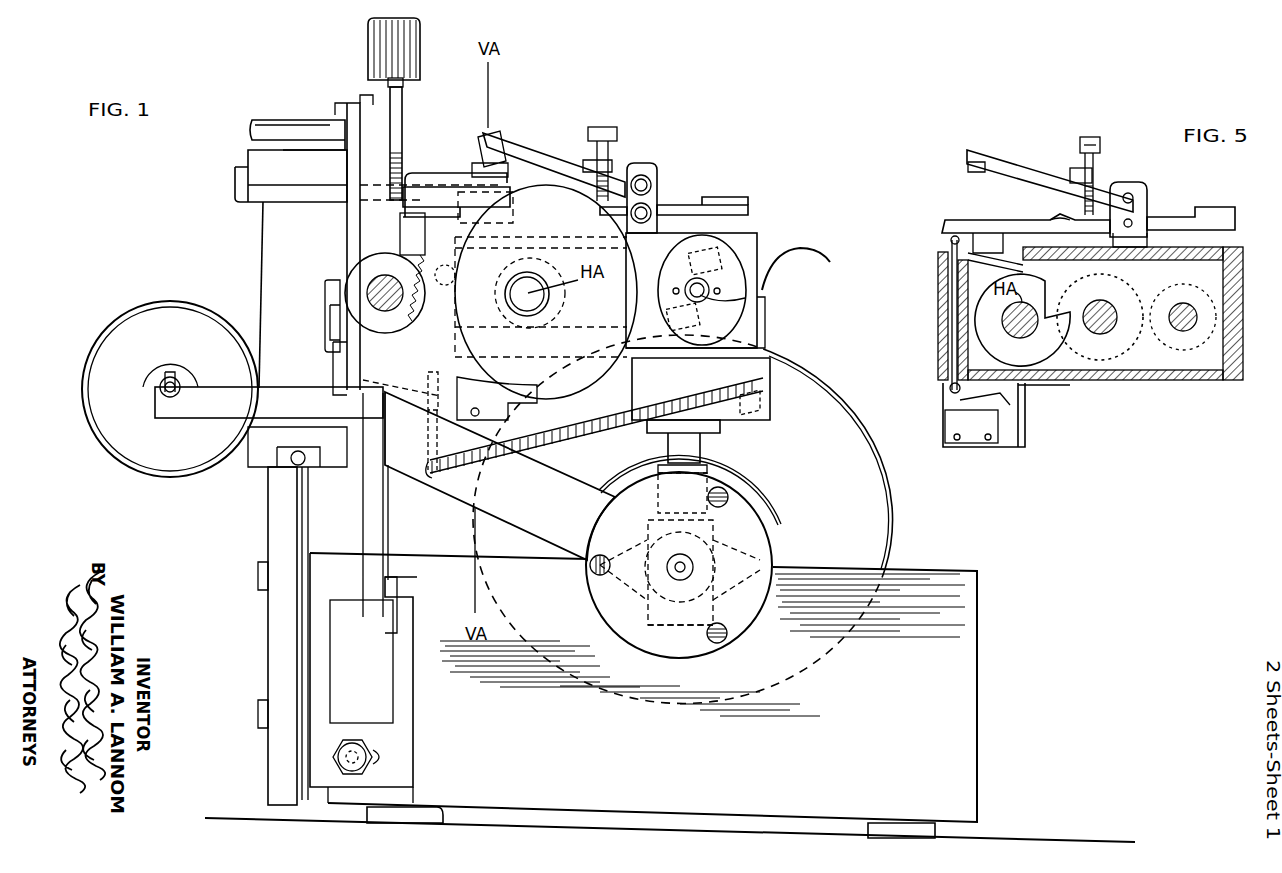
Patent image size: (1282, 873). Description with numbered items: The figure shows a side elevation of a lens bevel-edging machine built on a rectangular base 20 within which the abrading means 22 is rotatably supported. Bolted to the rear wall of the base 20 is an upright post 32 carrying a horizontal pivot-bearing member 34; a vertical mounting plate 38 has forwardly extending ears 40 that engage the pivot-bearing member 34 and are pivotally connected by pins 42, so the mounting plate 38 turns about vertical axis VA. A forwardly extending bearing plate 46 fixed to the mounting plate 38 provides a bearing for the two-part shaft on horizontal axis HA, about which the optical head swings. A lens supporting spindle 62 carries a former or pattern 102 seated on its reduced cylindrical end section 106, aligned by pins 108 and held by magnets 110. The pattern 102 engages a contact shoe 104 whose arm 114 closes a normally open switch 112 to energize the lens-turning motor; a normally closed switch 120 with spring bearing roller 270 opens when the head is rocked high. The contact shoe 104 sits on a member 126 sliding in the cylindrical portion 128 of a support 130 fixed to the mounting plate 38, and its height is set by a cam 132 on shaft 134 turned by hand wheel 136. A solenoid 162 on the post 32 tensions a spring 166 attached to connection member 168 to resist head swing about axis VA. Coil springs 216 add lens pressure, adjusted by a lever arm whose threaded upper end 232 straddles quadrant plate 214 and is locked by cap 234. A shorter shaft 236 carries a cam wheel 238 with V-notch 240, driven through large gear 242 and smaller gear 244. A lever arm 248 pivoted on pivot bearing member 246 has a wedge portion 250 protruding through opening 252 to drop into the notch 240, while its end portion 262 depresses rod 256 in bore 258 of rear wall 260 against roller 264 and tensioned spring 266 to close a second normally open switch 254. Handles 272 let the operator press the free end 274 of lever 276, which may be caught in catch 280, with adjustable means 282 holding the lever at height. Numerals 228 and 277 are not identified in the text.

In FIG. 1, the base 20 is at (967, 687).
In FIG. 1, the abrading means 22 is at (882, 528).
In FIG. 1, the upright or post 32 is at (274, 518).
In FIG. 1, the pivot-bearing member 34 is at (453, 187).
In FIG. 1, the mounting plate 38 is at (380, 356).
In FIG. 1, the horizontal ears 40 is at (418, 218).
In FIG. 1, the pins 42 is at (498, 152).
In FIG. 1, the bearing plate 46 is at (545, 325).
In FIG. 1, the lens supporting spindle 62 is at (745, 298).
In FIG. 1, the former or pattern 102 is at (725, 246).
In FIG. 1, the contact shoe 104 is at (775, 366).
In FIG. 1, the reduced cylindrical end section 106 is at (685, 290).
In FIG. 1, the pins 108 is at (720, 290).
In FIG. 1, the magnets 110 is at (760, 323).
In FIG. 1, the normally open switch 112 is at (758, 422).
In FIG. 1, the arm 114 is at (740, 345).
In FIG. 1, the normally closed switch 120 is at (400, 383).
In FIG. 1, the member 126 is at (703, 448).
In FIG. 1, the cylindrical portion 128 is at (628, 630).
In FIG. 1, the support 130 is at (540, 532).
In FIG. 1, the cam 132 is at (718, 570).
In FIG. 1, the shaft 134 is at (676, 570).
In FIG. 1, the hand wheel 136 is at (758, 612).
In FIG. 1, the solenoid 162 is at (126, 316).
In FIG. 1, the spring 166 is at (168, 372).
In FIG. 1, the connection member 168 is at (218, 420).
In FIG. 1, the quadrant plate 214 is at (402, 108).
In FIG. 1, the coil springs 216 is at (565, 450).
In FIG. 1, the slot 228 is at (770, 412).
In FIG. 1, the upper end of lever arm 232 is at (410, 76).
In FIG. 1, the cap 234 is at (362, 30).
In FIG. 5, the shorter shaft 236 is at (1028, 332).
In FIG. 5, the cam wheel 238 is at (977, 320).
In FIG. 5, the V-notch 240 is at (1068, 300).
In FIG. 1, the large gear 242 is at (545, 165).
In FIG. 1, the smaller gear 244 is at (350, 266).
In FIG. 1, the pivot bearing member 246 is at (657, 172).
In FIG. 5, the pivot bearing member 246 is at (1147, 194).
In FIG. 1, the lever arm 248 is at (665, 205).
In FIG. 5, the lever arm 248 is at (1020, 222).
In FIG. 5, the wedge portion 250 is at (977, 243).
In FIG. 5, the opening 252 is at (1020, 253).
In FIG. 5, the second normally open switch 254 is at (953, 422).
In FIG. 5, the rod 256 is at (955, 272).
In FIG. 5, the bore 258 is at (950, 348).
In FIG. 5, the rear wall 260 is at (940, 293).
In FIG. 5, the end portion 262 is at (943, 230).
In FIG. 5, the roller 264 is at (947, 391).
In FIG. 5, the tensioned spring 266 is at (1023, 410).
In FIG. 1, the spring bearing roller 270 is at (460, 302).
In FIG. 1, the handles 272 is at (814, 258).
In FIG. 1, the free end 274 is at (746, 198).
In FIG. 5, the free end 274 is at (1217, 207).
In FIG. 5, the lever 276 is at (1010, 158).
In FIG. 5, the lever tip 277 is at (967, 166).
In FIG. 1, the catch 280 is at (445, 177).
In FIG. 5, the adjustable means 282 is at (1100, 147).